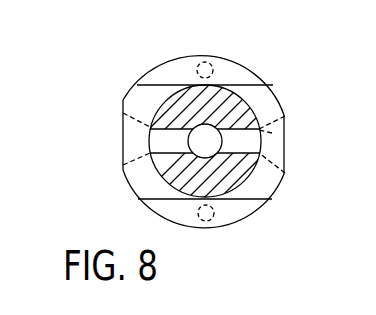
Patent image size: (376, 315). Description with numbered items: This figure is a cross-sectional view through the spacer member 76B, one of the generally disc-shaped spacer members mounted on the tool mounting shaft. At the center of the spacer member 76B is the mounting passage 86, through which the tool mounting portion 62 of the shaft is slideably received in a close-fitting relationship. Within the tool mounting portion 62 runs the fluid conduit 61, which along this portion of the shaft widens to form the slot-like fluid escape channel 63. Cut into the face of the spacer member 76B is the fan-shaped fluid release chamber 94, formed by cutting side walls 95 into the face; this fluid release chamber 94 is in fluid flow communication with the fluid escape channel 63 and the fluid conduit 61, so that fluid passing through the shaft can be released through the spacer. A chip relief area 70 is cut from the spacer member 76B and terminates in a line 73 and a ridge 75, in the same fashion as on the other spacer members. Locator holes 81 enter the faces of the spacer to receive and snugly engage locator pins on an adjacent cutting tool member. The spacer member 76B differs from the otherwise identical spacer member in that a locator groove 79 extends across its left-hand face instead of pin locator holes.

The spacer member 76B is at (161, 50).
The locator holes 81 is at (204, 62).
The mounting passage 86 is at (226, 94).
The tool mounting portion 62 is at (238, 112).
The ridge 75 is at (285, 116).
The fluid release chamber 94 is at (272, 133).
The fluid escape channel 63 is at (243, 139).
The side walls 95 is at (123, 150).
The line 73 is at (123, 101).
The chip relief area 70 is at (123, 118).
The locator groove 79 is at (123, 100).
The fluid conduit 61 is at (212, 149).